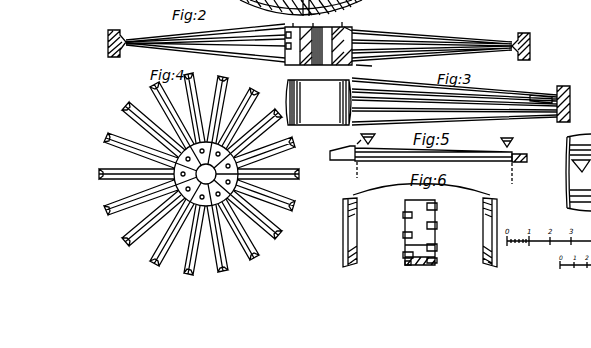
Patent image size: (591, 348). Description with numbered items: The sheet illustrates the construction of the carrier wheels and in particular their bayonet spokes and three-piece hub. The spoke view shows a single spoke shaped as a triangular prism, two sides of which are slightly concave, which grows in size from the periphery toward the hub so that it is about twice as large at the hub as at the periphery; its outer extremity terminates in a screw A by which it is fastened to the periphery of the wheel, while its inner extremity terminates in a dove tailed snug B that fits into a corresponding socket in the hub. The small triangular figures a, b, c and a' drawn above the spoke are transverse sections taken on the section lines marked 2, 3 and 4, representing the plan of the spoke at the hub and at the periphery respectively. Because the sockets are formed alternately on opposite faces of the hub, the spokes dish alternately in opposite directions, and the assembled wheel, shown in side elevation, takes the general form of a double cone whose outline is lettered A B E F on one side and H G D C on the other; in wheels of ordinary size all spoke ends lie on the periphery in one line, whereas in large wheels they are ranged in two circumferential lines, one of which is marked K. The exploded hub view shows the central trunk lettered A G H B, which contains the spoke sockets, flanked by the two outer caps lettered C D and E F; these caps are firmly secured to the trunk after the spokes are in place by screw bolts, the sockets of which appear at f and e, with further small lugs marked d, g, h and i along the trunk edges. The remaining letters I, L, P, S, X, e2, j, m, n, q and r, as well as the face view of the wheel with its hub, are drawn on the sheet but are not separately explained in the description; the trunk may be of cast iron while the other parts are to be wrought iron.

In FIG. 2, the screw A is at (120, 42).
In FIG. 4, the screw A is at (182, 169).
In FIG. 5, the screw A is at (524, 158).
In FIG. 6, the screw A is at (412, 230).
In FIG. 2, the dove tailed snug B is at (205, 28).
In FIG. 4, the dove tailed snug B is at (129, 175).
In FIG. 5, the dove tailed snug B is at (414, 154).
In FIG. 6, the dove tailed snug B is at (440, 272).
In FIG. 2, the hub cap corner C is at (128, 54).
In FIG. 4, the hub cap corner C is at (255, 160).
In FIG. 6, the hub cap corner C is at (490, 227).
In FIG. 2, the hub cap corner D is at (206, 58).
In FIG. 4, the hub cap corner D is at (286, 157).
In FIG. 6, the hub cap corner D is at (494, 274).
In FIG. 2, the hub cap corner E is at (356, 19).
In FIG. 6, the hub cap corner E is at (350, 227).
In FIG. 2, the hub cap corner F is at (432, 38).
In FIG. 6, the hub cap corner F is at (345, 274).
In FIG. 2, the hub trunk corner G is at (354, 70).
In FIG. 6, the hub trunk corner G is at (440, 200).
In FIG. 2, the hub trunk corner H is at (432, 56).
In FIG. 6, the hub trunk corner H is at (398, 272).
In FIG. 3, the cylinder I is at (322, 102).
In FIG. 3, the circumferential line of spoke ends K is at (454, 101).
In FIG. 3, the cylinder end L is at (357, 118).
In FIG. 2, the right bracket P is at (521, 42).
In FIG. 2, the bracket foot S is at (534, 63).
In FIG. 2, the axis X is at (367, 70).
In FIG. 2, the transverse section of spoke a is at (320, 20).
In FIG. 4, the transverse section of spoke a is at (238, 168).
In FIG. 5, the transverse section of spoke a is at (366, 134).
In FIG. 2, the transverse section of spoke a' is at (309, 21).
In FIG. 5, the transverse section of spoke a' is at (506, 136).
In FIG. 2, the transverse section of spoke b is at (294, 21).
In FIG. 4, the transverse section of spoke b is at (176, 183).
In FIG. 5, the transverse section of spoke b is at (348, 143).
In FIG. 6, the transverse section of spoke b is at (401, 216).
In FIG. 4, the transverse section of spoke c is at (199, 162).
In FIG. 5, the transverse section of spoke c is at (379, 147).
In FIG. 6, the transverse section of spoke c is at (401, 235).
In FIG. 2, the lug d is at (208, 36).
In FIG. 4, the lug d is at (206, 175).
In FIG. 5, the lug d is at (588, 159).
In FIG. 6, the lug d is at (402, 254).
In FIG. 2, the screw bolt socket e is at (208, 45).
In FIG. 6, the screw bolt socket e is at (437, 207).
In FIG. 2, the lug e2 is at (339, 70).
In FIG. 2, the screw bolt socket f is at (295, 70).
In FIG. 6, the screw bolt socket f is at (437, 226).
In FIG. 2, the lug g is at (324, 70).
In FIG. 6, the lug g is at (437, 249).
In FIG. 6, the lug h is at (438, 261).
In FIG. 6, the lug i is at (402, 263).
In FIG. 2, the pin j is at (342, 21).
In FIG. 2, the rod m is at (368, 44).
In FIG. 2, the rod n is at (368, 19).
In FIG. 2, the bracket q is at (535, 34).
In FIG. 2, the bracket r is at (518, 64).
In FIG. 5, the section line 2 is at (513, 131).
In FIG. 5, the section line 3 is at (356, 175).
In FIG. 5, the section line 4 is at (511, 178).